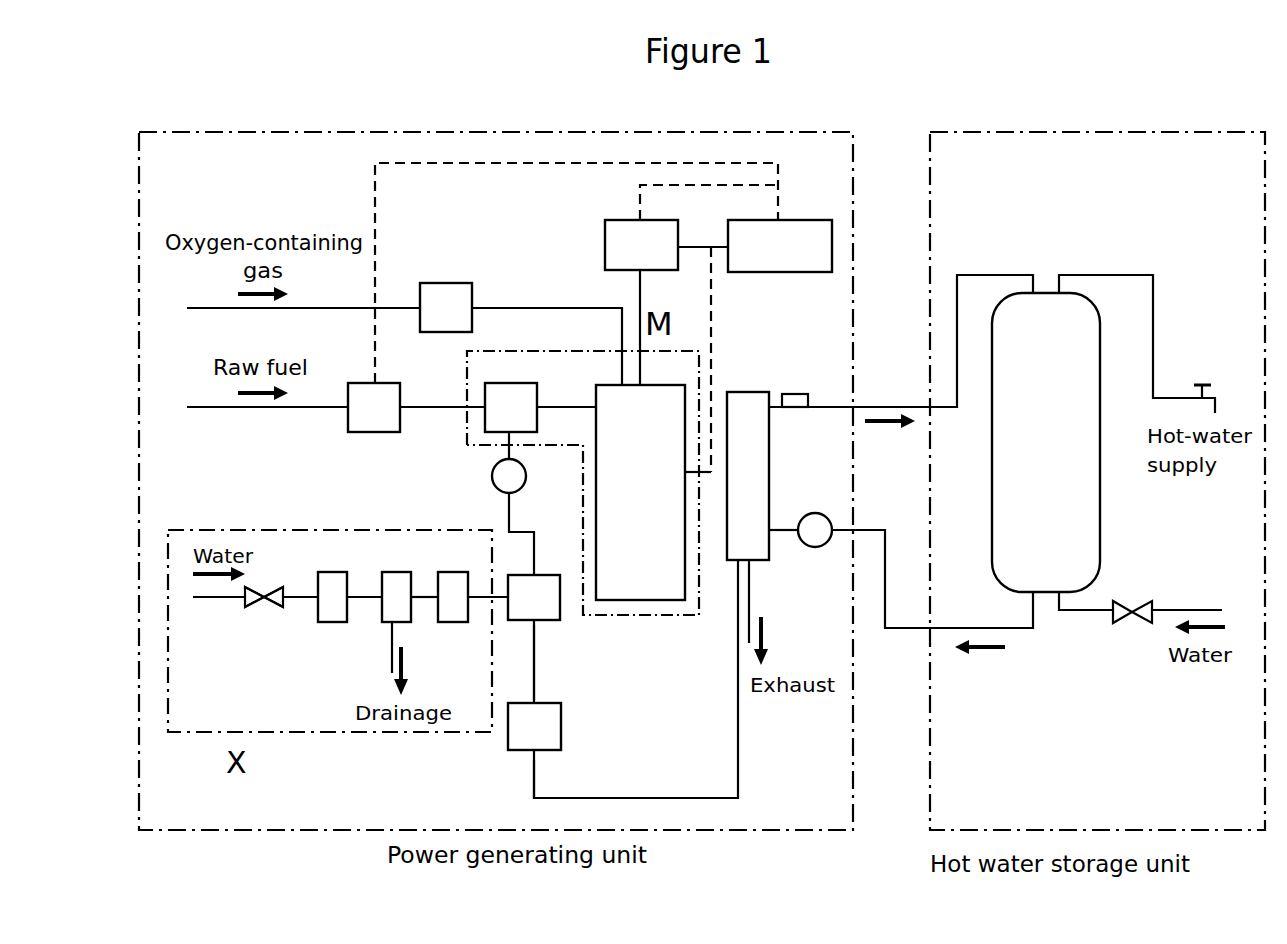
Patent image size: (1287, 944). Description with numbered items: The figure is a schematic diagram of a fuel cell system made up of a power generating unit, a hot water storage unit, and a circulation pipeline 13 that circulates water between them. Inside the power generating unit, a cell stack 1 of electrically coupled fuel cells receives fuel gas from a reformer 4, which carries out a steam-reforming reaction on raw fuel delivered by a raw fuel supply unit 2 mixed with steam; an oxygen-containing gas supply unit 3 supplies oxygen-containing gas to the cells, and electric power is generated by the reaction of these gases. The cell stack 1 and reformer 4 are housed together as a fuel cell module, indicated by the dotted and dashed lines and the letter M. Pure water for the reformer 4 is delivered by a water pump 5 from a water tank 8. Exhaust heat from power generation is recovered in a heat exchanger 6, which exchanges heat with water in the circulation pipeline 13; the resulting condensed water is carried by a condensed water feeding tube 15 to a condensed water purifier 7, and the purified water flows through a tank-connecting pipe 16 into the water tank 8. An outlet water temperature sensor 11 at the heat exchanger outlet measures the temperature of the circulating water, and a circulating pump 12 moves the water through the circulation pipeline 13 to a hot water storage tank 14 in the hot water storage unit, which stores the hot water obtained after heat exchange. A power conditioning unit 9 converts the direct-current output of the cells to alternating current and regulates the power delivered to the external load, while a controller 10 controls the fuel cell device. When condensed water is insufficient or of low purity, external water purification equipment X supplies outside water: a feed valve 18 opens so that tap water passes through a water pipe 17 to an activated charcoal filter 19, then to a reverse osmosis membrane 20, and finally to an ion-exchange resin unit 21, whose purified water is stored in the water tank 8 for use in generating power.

The cell stack 1 is at (638, 575).
The raw fuel supply unit 2 is at (377, 400).
The oxygen-containing gas supply unit 3 is at (458, 302).
The reformer 4 is at (500, 400).
The water pump 5 is at (503, 476).
The heat exchanger 6 is at (755, 545).
The condensed water purifier 7 is at (548, 722).
The water tank 8 is at (548, 610).
The power conditioning unit 9 is at (622, 257).
The controller 10 is at (795, 237).
The outlet water temperature sensor 11 is at (793, 393).
The circulating pump 12 is at (815, 513).
The circulation pipeline 13 is at (882, 407).
The hot water storage tank 14 is at (1073, 478).
The condensed water feeding tube 15 is at (534, 777).
The tank-connecting pipe 16 is at (534, 657).
The water pipe 17 is at (213, 600).
The feed valve 18 is at (256, 600).
The activated charcoal filter 19 is at (333, 610).
The reverse osmosis membrane 20 is at (390, 608).
The ion-exchange resin unit 21 is at (450, 608).